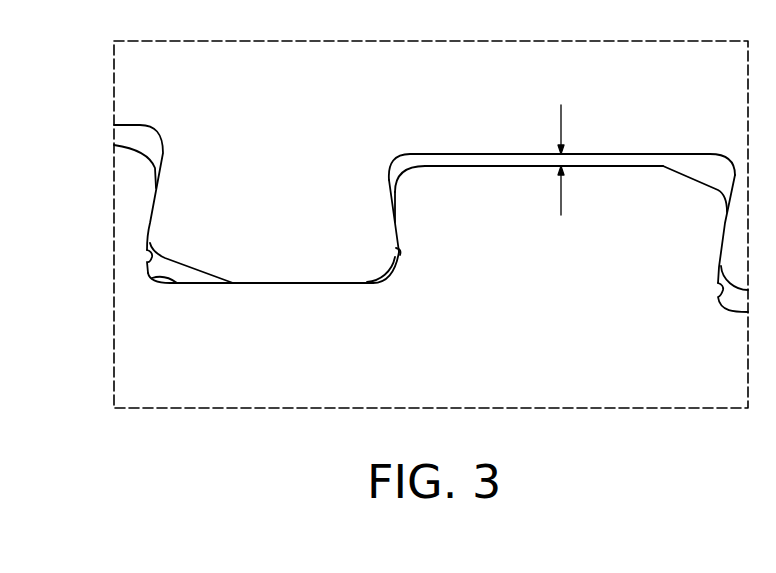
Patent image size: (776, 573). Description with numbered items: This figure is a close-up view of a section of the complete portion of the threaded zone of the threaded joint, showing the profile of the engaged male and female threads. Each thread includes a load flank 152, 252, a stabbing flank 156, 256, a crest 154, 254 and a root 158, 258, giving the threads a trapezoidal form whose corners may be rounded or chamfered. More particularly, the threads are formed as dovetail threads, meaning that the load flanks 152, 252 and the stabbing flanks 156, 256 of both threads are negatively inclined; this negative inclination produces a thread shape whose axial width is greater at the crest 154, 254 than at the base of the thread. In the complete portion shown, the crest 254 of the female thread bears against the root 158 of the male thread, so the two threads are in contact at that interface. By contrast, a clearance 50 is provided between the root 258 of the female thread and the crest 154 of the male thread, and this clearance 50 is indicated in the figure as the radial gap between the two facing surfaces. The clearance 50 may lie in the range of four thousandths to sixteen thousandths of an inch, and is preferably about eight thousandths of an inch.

The clearance 50 is at (561, 127).
The load flank 152 is at (400, 250).
The crest 154 is at (645, 160).
The stabbing flank 156 is at (145, 263).
The root 158 is at (153, 275).
The load flank 252 is at (395, 222).
The crest 254 is at (273, 283).
The stabbing flank 256 is at (152, 207).
The root 258 is at (612, 157).